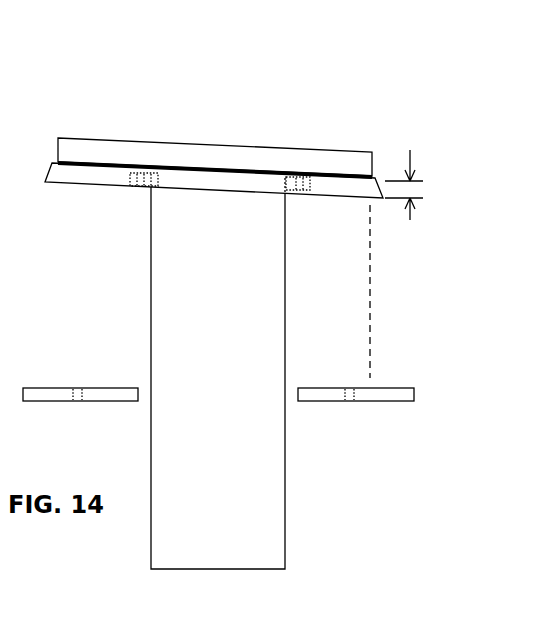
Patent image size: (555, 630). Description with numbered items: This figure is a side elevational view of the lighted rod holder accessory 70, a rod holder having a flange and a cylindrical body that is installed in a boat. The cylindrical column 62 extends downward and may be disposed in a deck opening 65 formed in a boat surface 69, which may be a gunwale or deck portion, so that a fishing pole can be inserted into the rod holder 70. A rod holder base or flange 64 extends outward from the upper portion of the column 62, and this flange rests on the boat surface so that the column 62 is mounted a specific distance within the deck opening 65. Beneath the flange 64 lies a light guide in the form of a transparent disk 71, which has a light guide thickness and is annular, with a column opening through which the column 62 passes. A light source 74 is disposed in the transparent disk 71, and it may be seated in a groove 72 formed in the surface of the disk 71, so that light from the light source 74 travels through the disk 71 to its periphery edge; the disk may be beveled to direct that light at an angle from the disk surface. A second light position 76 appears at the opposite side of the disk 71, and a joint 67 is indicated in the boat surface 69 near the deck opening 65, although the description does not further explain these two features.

The lighted rod holder accessory 70 is at (2, 72).
The rod holder flange 64 is at (313, 158).
The groove 72 is at (117, 166).
The transparent disk 71 is at (60, 172).
The light source 74 is at (131, 182).
The weld 76 is at (298, 196).
The cylindrical column 62 is at (158, 253).
The deck opening 65 is at (140, 397).
The boat surface 69 is at (97, 389).
The tab joint 67 is at (72, 393).